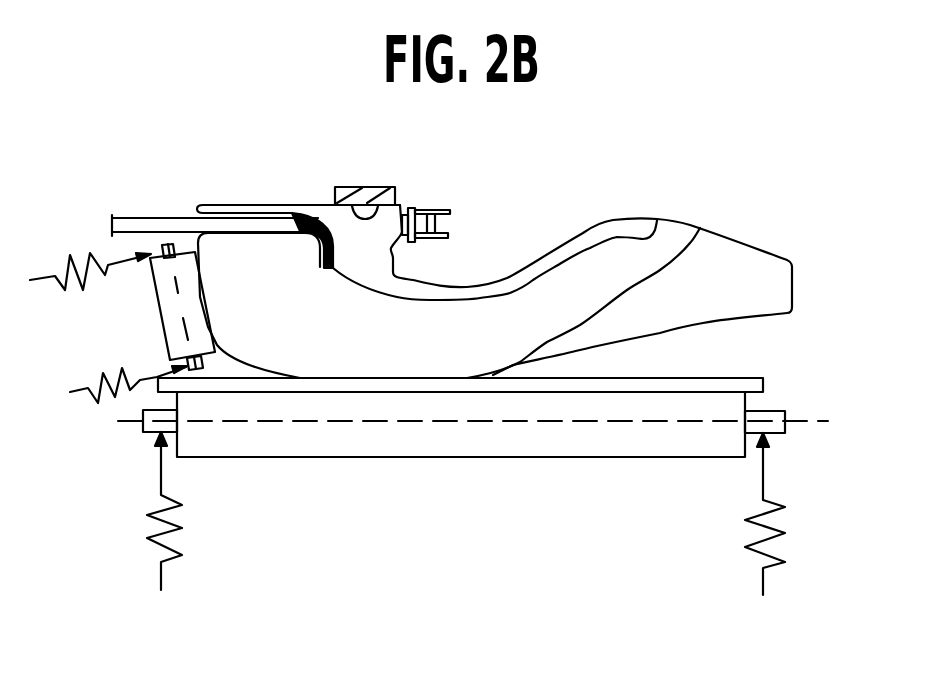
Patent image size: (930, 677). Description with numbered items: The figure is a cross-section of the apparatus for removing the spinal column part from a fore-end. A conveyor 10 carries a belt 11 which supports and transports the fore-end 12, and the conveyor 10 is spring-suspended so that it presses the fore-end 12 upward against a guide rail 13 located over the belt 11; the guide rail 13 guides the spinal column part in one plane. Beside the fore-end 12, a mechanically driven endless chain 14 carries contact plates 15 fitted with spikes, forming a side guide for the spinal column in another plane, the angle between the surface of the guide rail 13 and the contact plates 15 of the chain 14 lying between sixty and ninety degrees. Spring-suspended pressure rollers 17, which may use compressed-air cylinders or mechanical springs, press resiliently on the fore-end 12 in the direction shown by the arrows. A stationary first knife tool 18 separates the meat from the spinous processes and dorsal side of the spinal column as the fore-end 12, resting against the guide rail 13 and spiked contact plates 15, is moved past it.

The conveyor 10 is at (482, 442).
The belt 11 is at (763, 380).
The fore-end 12 is at (733, 273).
The guide rail 13 is at (357, 187).
The endless chain 14 is at (444, 208).
The contact plates 15 is at (413, 207).
The pressure rollers 17 is at (160, 312).
The first knife tool 18 is at (142, 218).